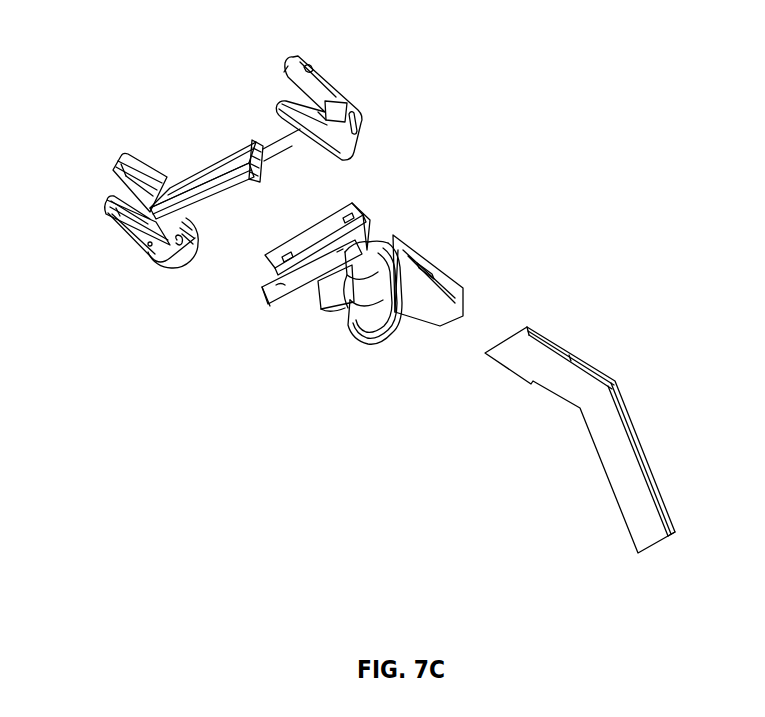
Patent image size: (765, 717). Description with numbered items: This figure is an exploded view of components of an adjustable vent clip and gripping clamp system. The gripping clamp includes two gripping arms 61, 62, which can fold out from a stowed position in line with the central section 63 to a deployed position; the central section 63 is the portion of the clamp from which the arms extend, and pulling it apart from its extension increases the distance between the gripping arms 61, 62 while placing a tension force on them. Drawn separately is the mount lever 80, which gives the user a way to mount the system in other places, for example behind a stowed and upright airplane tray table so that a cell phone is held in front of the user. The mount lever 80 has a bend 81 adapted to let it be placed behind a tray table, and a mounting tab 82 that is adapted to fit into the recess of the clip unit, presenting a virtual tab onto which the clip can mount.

The gripping arm 61 is at (120, 152).
The gripping arm 62 is at (317, 63).
The central section 63 is at (228, 156).
The mount lever 80 is at (643, 447).
The bend 81 is at (615, 385).
The mounting tab 82 is at (548, 332).